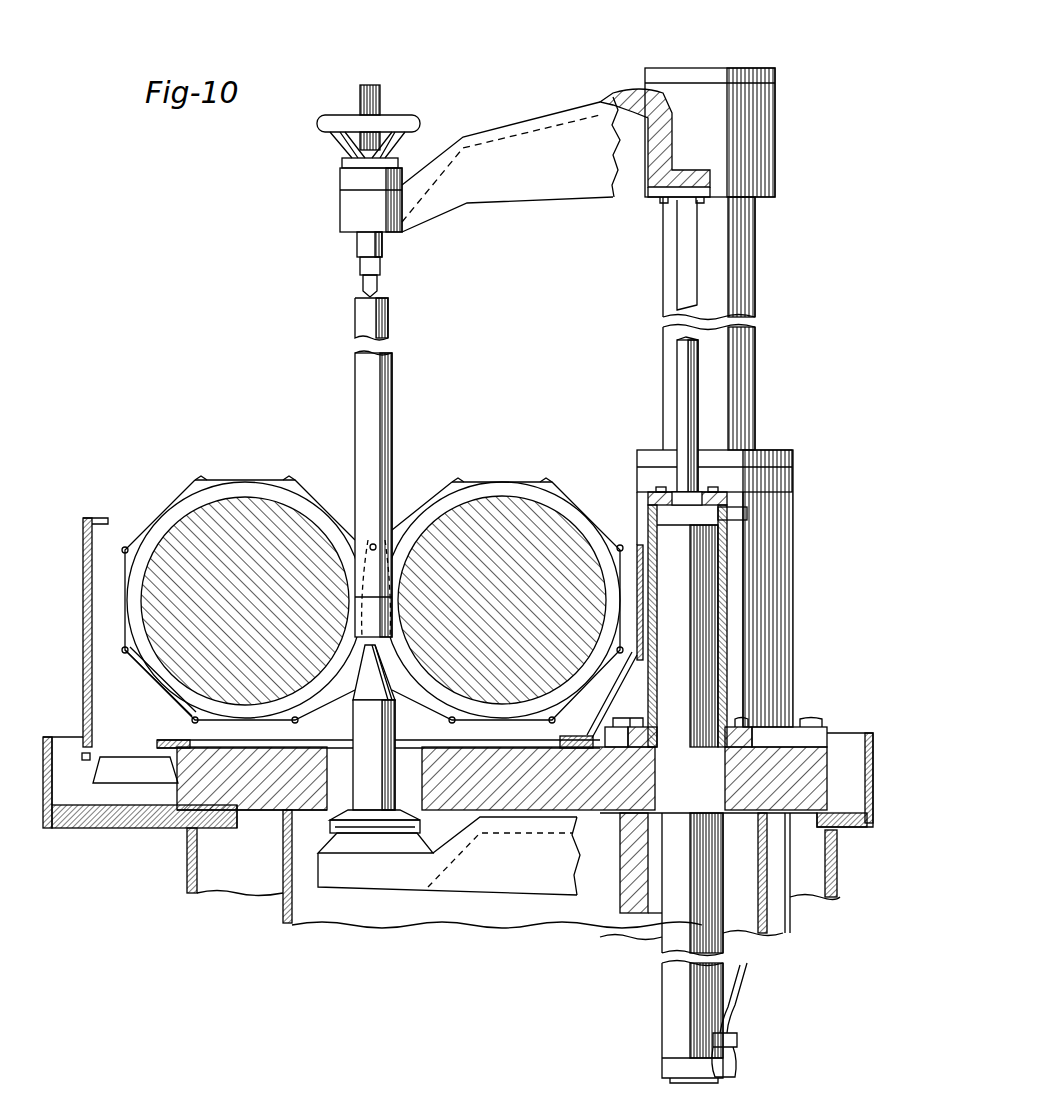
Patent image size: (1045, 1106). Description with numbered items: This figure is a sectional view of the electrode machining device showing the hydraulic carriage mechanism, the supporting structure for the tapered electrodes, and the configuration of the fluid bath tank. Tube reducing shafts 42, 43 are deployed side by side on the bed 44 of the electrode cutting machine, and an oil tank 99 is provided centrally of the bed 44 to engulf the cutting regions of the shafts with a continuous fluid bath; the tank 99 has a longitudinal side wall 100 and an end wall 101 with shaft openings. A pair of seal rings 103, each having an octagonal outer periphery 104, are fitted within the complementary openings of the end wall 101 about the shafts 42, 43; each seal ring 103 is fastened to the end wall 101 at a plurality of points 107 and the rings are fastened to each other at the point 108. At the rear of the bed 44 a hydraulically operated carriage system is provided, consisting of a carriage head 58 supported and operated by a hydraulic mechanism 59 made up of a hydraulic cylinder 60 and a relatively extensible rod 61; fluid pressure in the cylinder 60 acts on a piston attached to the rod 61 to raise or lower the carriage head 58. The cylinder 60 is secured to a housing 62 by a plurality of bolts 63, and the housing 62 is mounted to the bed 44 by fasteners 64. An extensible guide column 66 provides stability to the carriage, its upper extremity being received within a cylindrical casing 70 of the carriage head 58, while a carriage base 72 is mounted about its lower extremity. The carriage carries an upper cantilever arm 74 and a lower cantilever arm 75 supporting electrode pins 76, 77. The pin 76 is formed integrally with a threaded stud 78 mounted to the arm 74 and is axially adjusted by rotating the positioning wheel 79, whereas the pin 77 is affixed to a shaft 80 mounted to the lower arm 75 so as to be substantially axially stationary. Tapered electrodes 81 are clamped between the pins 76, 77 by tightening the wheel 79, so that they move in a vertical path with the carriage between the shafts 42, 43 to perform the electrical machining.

The tube reducing shaft 42 is at (232, 528).
The tube reducing shaft 43 is at (480, 550).
The bed 44 is at (507, 780).
The carriage head 58 is at (700, 52).
The hydraulic mechanism 59 is at (730, 627).
The hydraulic cylinder 60 is at (655, 528).
The extensible rod 61 is at (680, 354).
The housing 62 is at (650, 512).
The bolts 63 is at (661, 486).
The fasteners 64 is at (742, 718).
The guide column 66 is at (760, 276).
The cylindrical casing 70 is at (765, 100).
The carriage base 72 is at (555, 835).
The upper cantilever arm 74 is at (543, 115).
The lower cantilever arm 75 is at (448, 858).
The electrode pin 76 is at (385, 285).
The electrode pin 77 is at (360, 688).
The threaded stud 78 is at (384, 98).
The positioning wheel 79 is at (325, 125).
The shaft 80 is at (377, 736).
The tapered electrodes 81 is at (380, 402).
The oil tank 99 is at (82, 566).
The longitudinal side wall 100 is at (83, 677).
The end wall 101 is at (108, 532).
The seal ring 103 is at (282, 476).
The octagonal outer periphery 104 is at (172, 698).
The fastening points 107 is at (125, 652).
The fastening point 108 is at (376, 544).